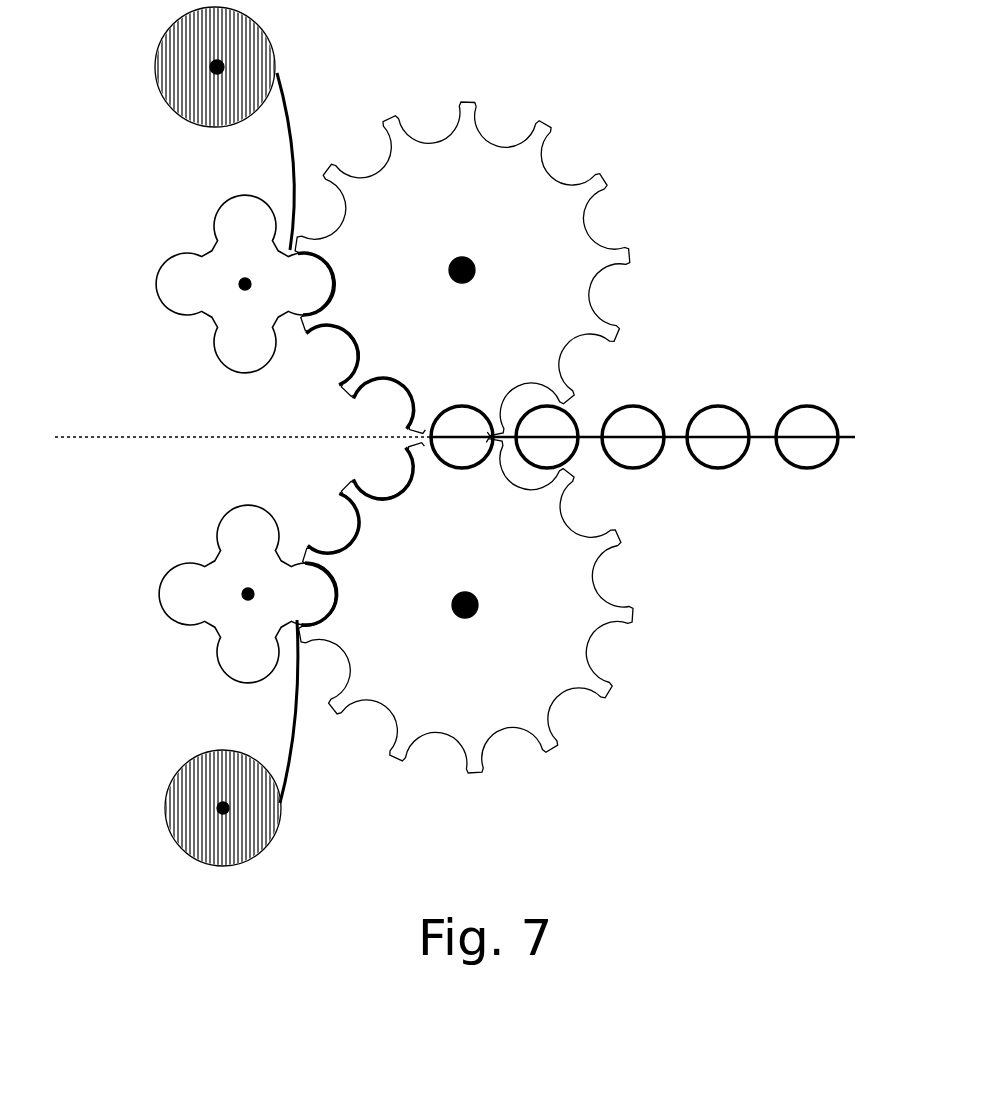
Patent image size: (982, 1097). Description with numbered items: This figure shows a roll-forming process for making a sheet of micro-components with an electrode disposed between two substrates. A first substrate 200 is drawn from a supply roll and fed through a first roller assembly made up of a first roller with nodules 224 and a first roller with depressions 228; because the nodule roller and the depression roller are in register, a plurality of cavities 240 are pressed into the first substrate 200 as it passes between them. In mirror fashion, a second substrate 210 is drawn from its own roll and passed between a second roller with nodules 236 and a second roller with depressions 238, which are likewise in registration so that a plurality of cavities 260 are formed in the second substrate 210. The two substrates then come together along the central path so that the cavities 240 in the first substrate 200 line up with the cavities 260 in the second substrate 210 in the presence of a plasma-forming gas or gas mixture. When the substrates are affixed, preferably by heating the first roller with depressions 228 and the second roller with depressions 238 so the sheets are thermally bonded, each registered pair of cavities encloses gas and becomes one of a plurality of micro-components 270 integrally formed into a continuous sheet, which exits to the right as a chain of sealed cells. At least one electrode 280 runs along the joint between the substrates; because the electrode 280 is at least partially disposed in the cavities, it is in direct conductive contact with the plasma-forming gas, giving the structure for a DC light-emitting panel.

The first substrate 200 is at (292, 762).
The second substrate 210 is at (287, 107).
The first roller with nodules 224 is at (215, 555).
The first roller with depressions 228 is at (590, 642).
The second roller with nodules 236 is at (212, 320).
The second roller with depressions 238 is at (587, 227).
The plurality of cavities 240 is at (393, 477).
The plurality of cavities 260 is at (340, 333).
The plurality of micro-components 270 is at (558, 423).
The electrode 280 is at (100, 437).